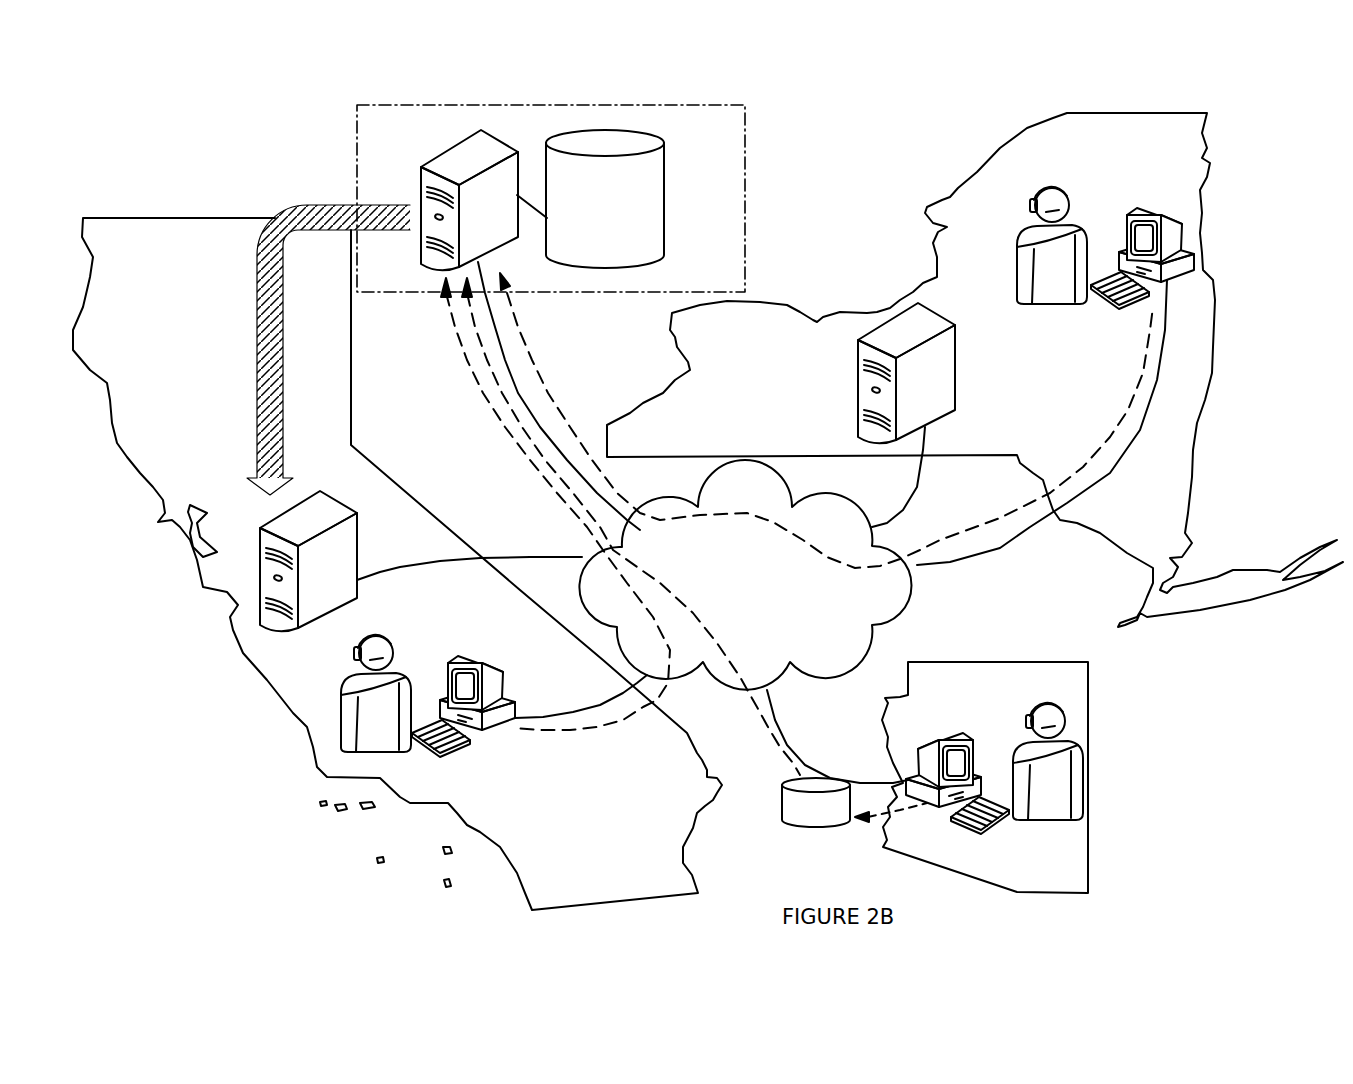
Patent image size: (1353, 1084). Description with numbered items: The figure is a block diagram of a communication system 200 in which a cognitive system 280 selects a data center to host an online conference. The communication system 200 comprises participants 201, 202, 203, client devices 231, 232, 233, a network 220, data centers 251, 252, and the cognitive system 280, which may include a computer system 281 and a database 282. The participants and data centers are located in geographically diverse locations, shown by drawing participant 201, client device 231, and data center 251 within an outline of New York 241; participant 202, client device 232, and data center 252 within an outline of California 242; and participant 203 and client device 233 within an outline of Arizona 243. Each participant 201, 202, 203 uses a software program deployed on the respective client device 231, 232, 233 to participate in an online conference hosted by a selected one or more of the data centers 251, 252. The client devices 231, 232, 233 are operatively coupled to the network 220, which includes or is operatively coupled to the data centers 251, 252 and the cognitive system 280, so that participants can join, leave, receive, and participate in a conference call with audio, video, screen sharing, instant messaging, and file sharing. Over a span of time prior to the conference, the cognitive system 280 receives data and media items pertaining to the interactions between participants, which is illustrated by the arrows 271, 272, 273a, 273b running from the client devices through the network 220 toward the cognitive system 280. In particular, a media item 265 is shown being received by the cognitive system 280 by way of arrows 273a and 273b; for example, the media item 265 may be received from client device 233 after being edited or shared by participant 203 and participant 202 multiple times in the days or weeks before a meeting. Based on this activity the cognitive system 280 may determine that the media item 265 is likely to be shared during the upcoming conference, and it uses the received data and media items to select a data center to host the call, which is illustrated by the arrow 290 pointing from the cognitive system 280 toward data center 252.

The communication system 200 is at (119, 127).
The outline of California 242 is at (195, 218).
The arrow 290 is at (259, 306).
The computer system 281 is at (446, 150).
The database 282 is at (605, 199).
The cognitive system 280 is at (551, 198).
The data center 252 is at (357, 548).
The participant 202 is at (358, 676).
The client device 232 is at (478, 657).
The arrow 272 is at (588, 733).
The network 220 is at (745, 575).
The data center 251 is at (953, 362).
The arrow 271 is at (1123, 413).
The outline of New York 241 is at (1210, 162).
The client device 231 is at (1170, 217).
The participant 201 is at (1037, 226).
The client device 233 is at (948, 728).
The participant 203 is at (1062, 744).
The outline of Arizona 243 is at (1090, 680).
The media item 265 is at (816, 802).
The arrow 273a is at (915, 805).
The arrow 273b is at (771, 733).